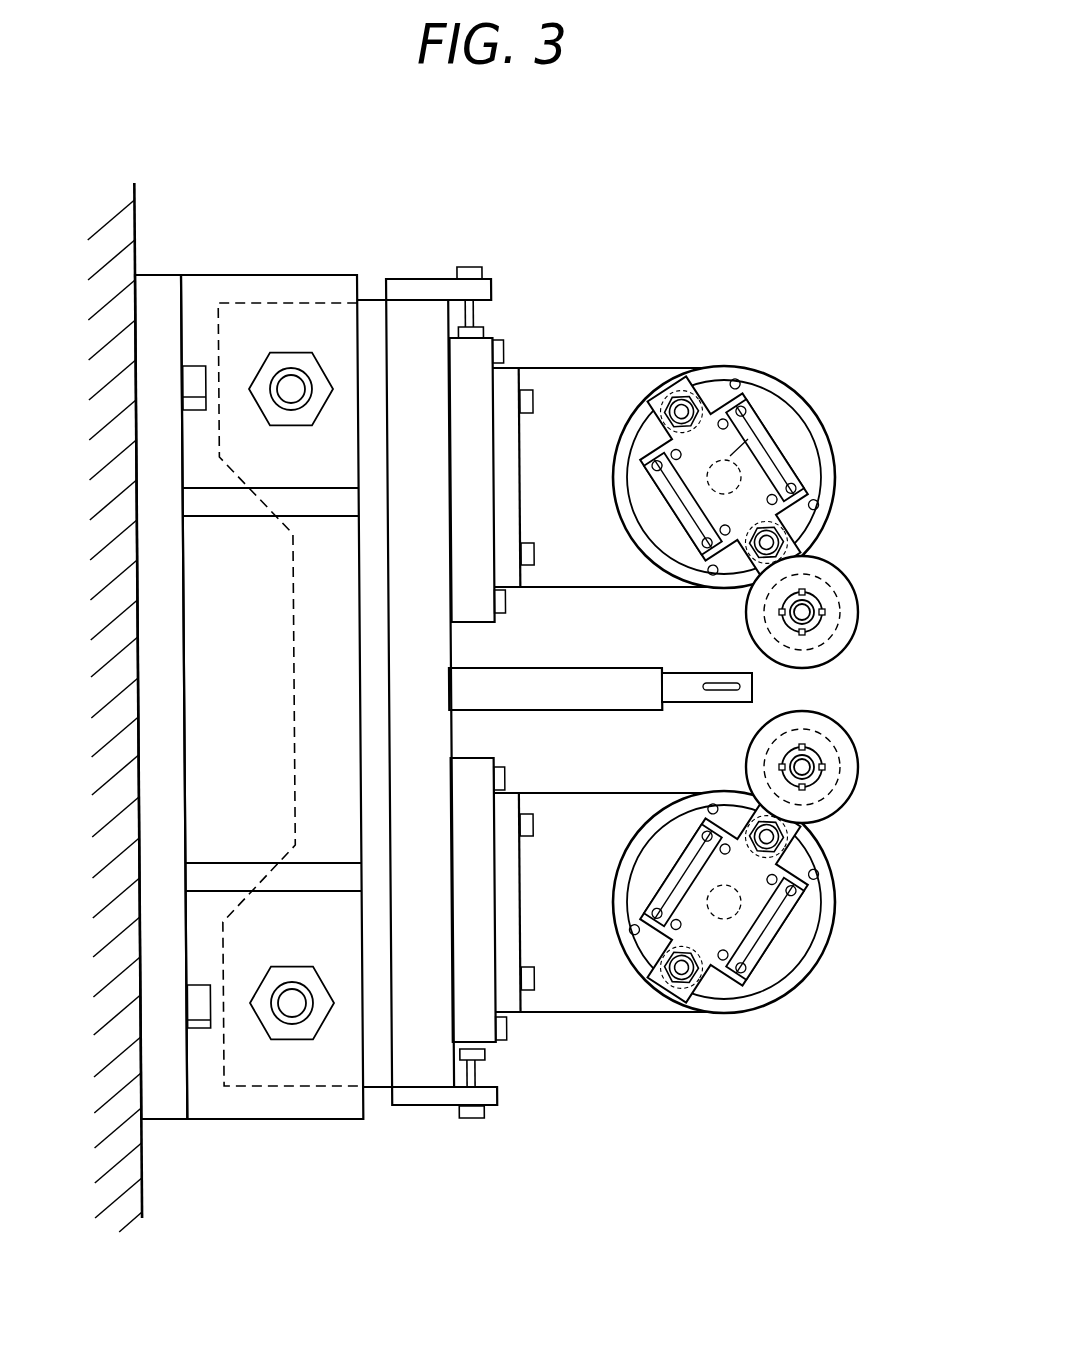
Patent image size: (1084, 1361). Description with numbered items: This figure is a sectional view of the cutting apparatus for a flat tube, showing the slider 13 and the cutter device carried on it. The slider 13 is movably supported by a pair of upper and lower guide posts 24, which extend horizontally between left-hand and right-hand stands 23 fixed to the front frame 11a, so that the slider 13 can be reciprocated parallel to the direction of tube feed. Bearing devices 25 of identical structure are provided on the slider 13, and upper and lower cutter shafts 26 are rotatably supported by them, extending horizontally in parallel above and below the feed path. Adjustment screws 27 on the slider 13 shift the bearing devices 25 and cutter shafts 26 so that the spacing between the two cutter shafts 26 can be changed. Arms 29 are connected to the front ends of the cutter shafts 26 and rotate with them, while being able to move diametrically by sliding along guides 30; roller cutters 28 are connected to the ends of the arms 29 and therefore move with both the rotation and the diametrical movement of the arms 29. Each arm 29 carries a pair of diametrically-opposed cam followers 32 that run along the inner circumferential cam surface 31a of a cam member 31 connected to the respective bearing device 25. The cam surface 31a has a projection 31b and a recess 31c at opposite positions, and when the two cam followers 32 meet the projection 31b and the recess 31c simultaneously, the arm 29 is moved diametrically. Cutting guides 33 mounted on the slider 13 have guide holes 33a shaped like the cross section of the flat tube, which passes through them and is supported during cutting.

The front frame 11a is at (137, 222).
The slider 13 is at (413, 1072).
The stands 23 is at (246, 301).
The guide posts 24 is at (291, 386).
The bearing devices 25 is at (592, 383).
The cutter shafts 26 is at (768, 435).
The adjustment screws 27 is at (478, 309).
The roller cutters 28 is at (847, 602).
The arms 29 is at (700, 428).
The guides 30 is at (767, 458).
The cam members 31 is at (810, 503).
The inner circumferential cam surface 31a is at (636, 441).
The projection 31b is at (710, 565).
The recess 31c is at (735, 392).
The cam followers 32 is at (692, 380).
The cutting guides 33 is at (680, 698).
The guide holes 33a is at (754, 701).